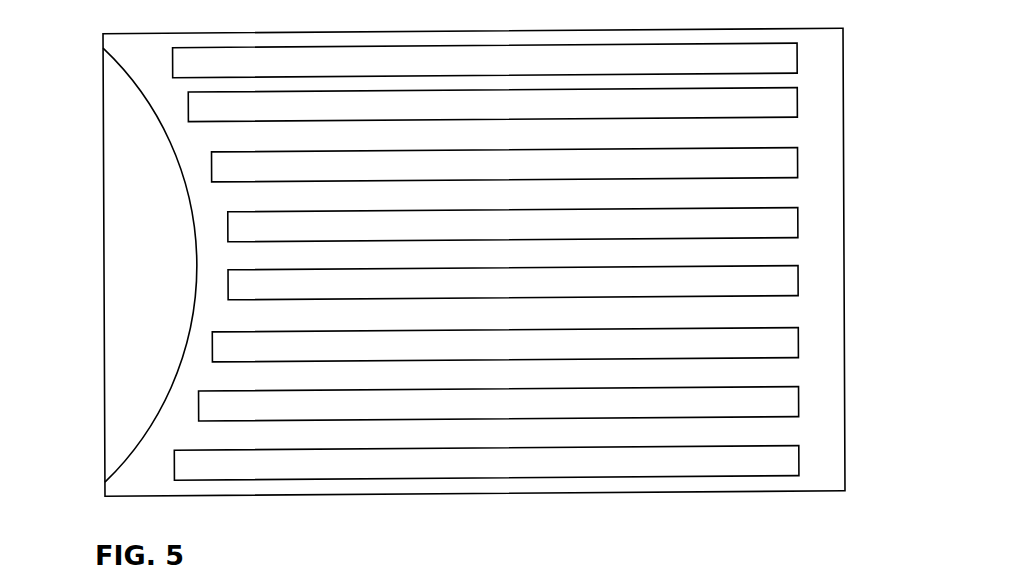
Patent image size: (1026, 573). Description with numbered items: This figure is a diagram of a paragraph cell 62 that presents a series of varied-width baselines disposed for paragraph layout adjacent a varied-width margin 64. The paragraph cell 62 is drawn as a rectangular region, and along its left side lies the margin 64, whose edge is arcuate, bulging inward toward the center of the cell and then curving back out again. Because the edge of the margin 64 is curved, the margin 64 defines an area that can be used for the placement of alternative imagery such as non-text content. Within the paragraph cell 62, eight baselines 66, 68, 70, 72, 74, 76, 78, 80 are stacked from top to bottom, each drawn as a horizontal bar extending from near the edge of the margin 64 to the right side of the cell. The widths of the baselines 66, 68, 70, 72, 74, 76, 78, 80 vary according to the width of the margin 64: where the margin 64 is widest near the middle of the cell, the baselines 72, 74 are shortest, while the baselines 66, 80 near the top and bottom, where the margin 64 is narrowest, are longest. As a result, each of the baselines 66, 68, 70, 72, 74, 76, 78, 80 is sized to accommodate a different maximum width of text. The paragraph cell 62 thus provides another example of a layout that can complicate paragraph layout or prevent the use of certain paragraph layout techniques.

The paragraph cell 62 is at (103, 268).
The margin 64 is at (196, 245).
The baseline 66 is at (798, 58).
The baseline 68 is at (798, 102).
The baseline 70 is at (798, 162).
The baseline 72 is at (798, 222).
The baseline 74 is at (798, 280).
The baseline 76 is at (798, 340).
The baseline 78 is at (798, 400).
The baseline 80 is at (798, 458).